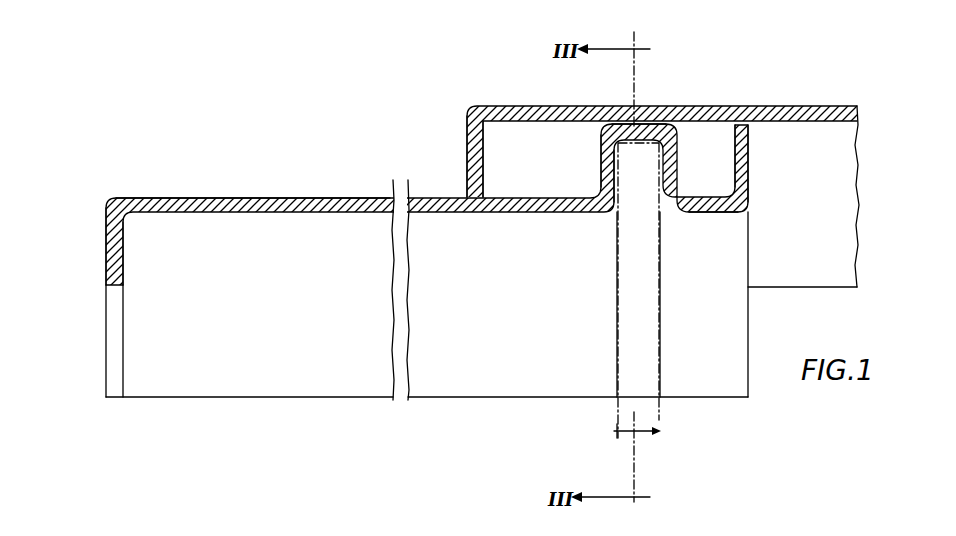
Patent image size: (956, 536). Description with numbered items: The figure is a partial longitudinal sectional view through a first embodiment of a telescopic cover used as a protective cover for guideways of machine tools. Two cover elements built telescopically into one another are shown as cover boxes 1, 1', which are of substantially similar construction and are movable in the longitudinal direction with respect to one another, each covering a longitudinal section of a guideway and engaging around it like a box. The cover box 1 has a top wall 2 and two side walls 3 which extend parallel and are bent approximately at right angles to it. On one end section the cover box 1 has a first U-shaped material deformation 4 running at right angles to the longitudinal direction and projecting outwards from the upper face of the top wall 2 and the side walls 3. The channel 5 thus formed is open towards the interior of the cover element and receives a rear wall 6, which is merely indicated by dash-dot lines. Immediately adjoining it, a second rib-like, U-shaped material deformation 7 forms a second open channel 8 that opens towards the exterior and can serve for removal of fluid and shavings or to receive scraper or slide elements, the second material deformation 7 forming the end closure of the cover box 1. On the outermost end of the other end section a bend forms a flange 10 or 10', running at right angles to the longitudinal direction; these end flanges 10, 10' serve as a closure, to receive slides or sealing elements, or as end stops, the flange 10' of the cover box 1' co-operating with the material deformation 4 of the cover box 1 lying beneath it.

The cover box 1 is at (427, 260).
The top wall 2 is at (301, 200).
The side walls 3 is at (448, 372).
The first U-shaped material deformation 4 is at (651, 121).
The channel 5 is at (613, 196).
The rear wall 6 is at (667, 433).
The second material deformation 7 is at (698, 213).
The second open channel 8 is at (738, 157).
The flange 10 is at (84, 247).
The flange 10' is at (441, 153).
The cover box 1' is at (663, 169).